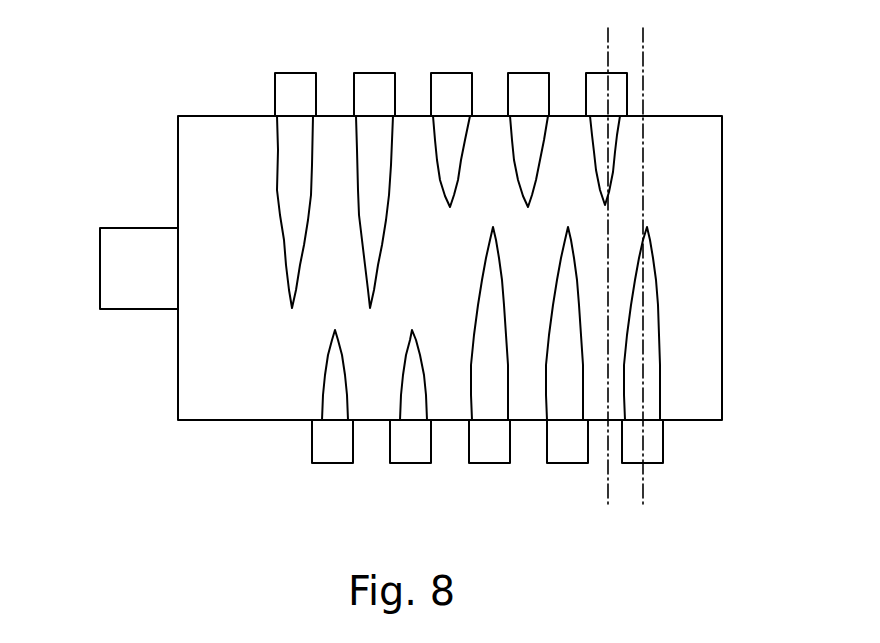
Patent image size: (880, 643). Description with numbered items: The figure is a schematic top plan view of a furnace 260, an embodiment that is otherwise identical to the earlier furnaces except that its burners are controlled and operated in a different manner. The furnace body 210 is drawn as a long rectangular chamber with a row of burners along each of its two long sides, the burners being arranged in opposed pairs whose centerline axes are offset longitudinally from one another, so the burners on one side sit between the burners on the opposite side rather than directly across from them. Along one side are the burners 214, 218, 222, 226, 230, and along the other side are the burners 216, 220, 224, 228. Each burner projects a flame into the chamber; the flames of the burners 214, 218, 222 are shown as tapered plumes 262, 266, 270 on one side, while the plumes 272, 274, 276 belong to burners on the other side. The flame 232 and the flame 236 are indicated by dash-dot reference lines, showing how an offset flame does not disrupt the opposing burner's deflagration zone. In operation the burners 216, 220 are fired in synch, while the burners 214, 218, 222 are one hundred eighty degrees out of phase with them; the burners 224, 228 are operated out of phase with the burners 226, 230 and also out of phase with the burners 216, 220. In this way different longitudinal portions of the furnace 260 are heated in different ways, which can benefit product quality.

The plasma chamber body 210 is at (108, 292).
The burner 214 is at (589, 81).
The burner 216 is at (548, 451).
The burner 218 is at (511, 81).
The burner 220 is at (470, 451).
The burner 222 is at (434, 81).
The burner 224 is at (391, 451).
The burner 226 is at (357, 81).
The burner 228 is at (313, 451).
The burner 230 is at (278, 81).
The flame 232 is at (643, 378).
The flame 236 is at (608, 153).
The furnace 260 is at (168, 78).
The plasma plume 262 is at (561, 290).
The plasma plume 266 is at (478, 328).
The plasma plume 270 is at (409, 374).
The plasma plume 272 is at (379, 221).
The plasma plume 274 is at (330, 374).
The plasma plume 276 is at (289, 221).